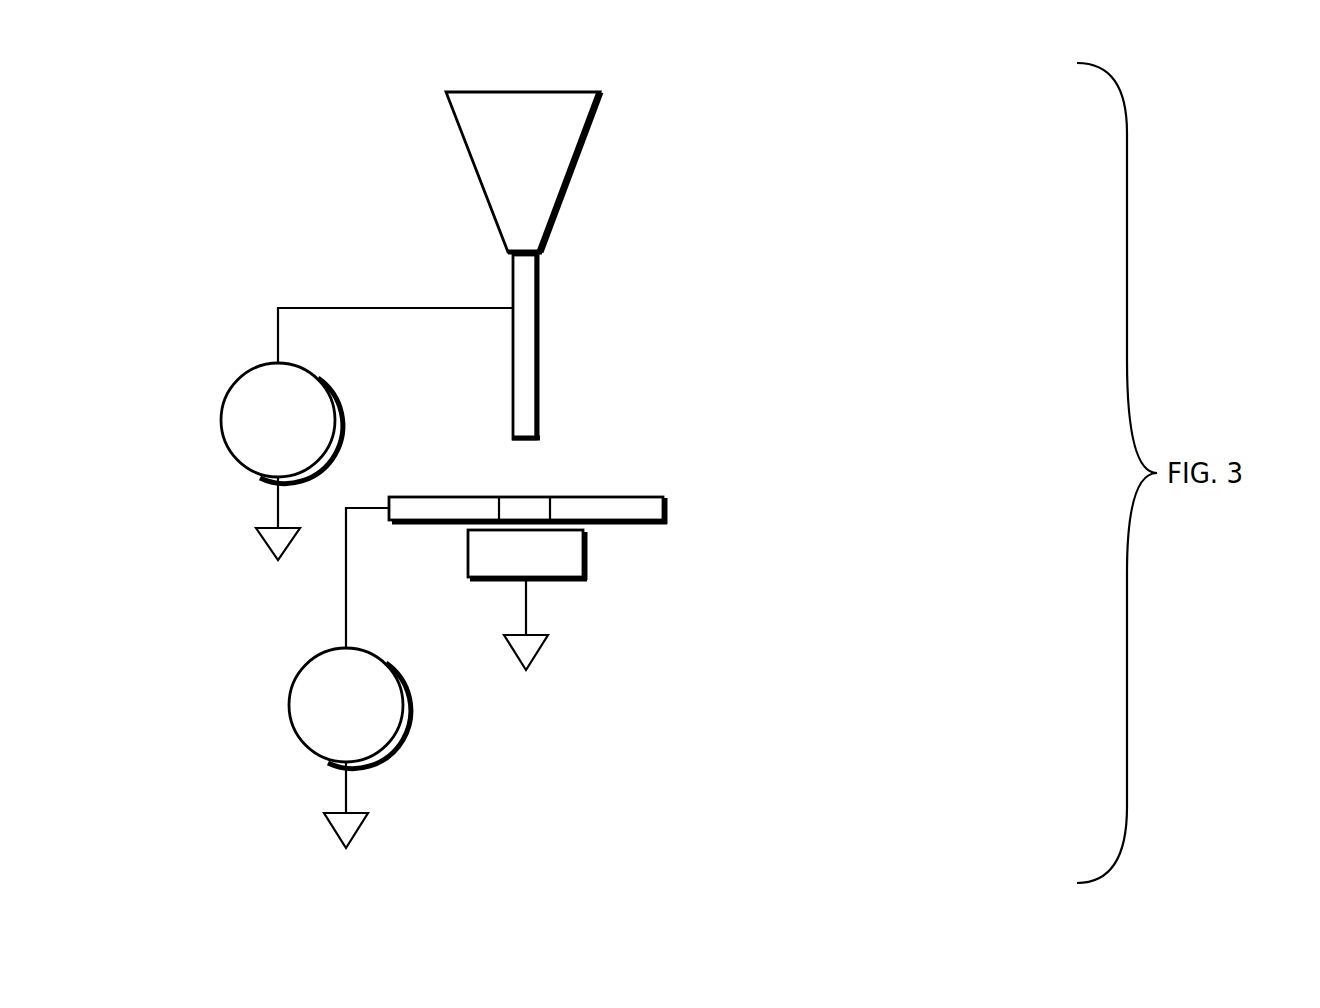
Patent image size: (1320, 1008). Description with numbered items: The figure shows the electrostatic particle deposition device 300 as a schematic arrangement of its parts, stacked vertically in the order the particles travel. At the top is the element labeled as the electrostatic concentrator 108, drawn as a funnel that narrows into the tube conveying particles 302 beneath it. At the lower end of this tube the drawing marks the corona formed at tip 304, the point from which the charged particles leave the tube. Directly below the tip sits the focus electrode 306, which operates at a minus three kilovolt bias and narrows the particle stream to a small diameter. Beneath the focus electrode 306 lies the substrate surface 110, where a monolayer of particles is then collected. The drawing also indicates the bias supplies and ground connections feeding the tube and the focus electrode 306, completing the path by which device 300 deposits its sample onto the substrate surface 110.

The device 300 is at (262, 86).
The electrostatic concentrator 108 is at (579, 158).
The tube conveying particles 302 is at (539, 322).
The corona formed at tip 304 is at (540, 439).
The focus electrode 306 is at (667, 512).
The substrate surface 110 is at (588, 575).